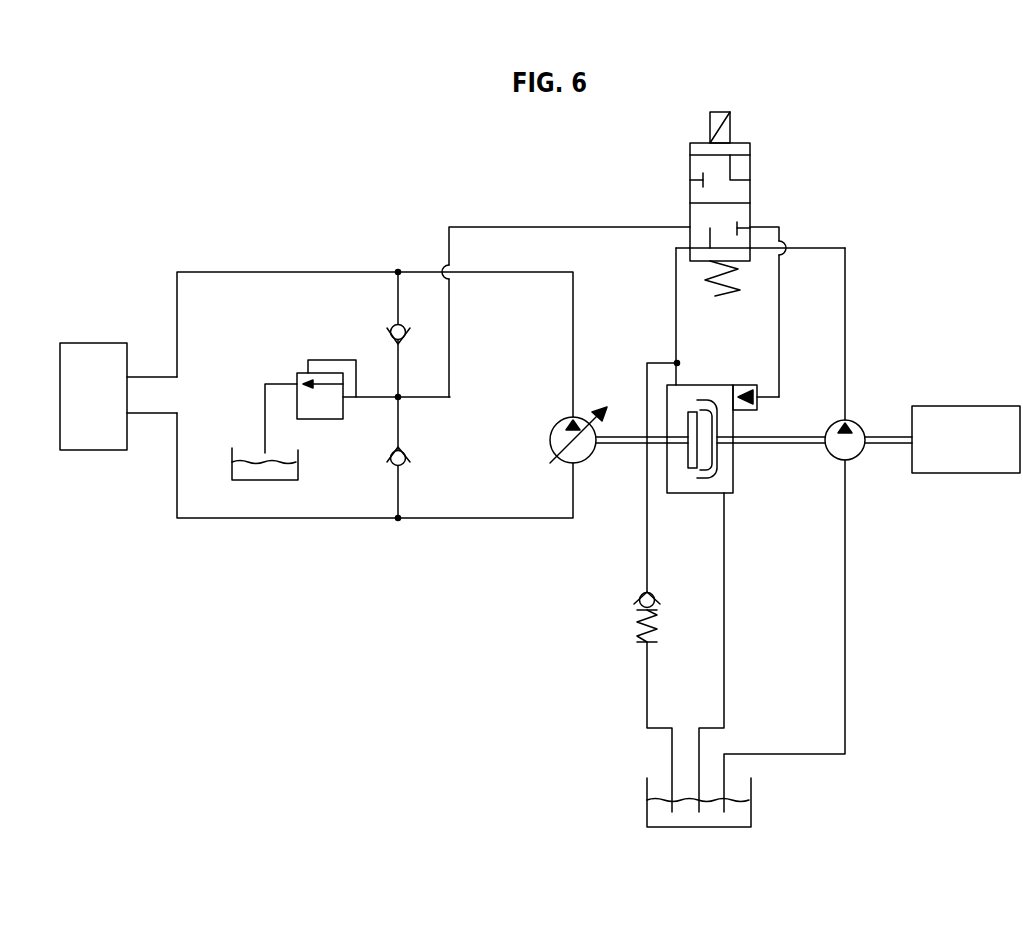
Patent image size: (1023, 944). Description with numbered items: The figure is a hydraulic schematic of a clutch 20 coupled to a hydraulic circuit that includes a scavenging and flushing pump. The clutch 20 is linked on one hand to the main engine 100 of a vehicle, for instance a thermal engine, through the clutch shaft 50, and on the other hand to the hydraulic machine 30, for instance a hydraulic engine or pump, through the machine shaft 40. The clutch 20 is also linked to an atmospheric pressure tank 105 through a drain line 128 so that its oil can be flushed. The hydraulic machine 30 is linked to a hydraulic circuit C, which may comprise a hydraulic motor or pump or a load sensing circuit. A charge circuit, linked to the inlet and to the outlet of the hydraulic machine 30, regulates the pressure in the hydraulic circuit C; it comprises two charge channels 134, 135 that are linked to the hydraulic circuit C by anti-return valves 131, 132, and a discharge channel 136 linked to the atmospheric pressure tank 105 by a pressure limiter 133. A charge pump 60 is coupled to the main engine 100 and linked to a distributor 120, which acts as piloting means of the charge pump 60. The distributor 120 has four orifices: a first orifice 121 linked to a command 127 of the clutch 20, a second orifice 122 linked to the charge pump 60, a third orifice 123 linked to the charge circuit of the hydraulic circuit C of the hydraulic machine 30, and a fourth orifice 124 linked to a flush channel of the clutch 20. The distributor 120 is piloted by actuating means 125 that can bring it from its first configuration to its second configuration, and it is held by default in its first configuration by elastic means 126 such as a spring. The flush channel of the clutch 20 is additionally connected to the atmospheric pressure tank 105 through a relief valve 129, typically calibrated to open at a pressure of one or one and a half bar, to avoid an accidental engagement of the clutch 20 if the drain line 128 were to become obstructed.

The hydraulic circuit C is at (93, 352).
The clutch 20 is at (683, 483).
The hydraulic machine 30 is at (591, 455).
The machine shaft 40 is at (620, 433).
The clutch shaft 50 is at (885, 433).
The charge pump 60 is at (858, 455).
The main engine 100 is at (963, 417).
The atmospheric pressure tank 105 is at (300, 470).
The distributor 120 is at (762, 185).
The first orifice 121 is at (751, 224).
The second orifice 122 is at (752, 263).
The third orifice 123 is at (690, 225).
The fourth orifice 124 is at (690, 241).
The actuating means 125 is at (718, 110).
The elastic means 126 is at (697, 272).
The command 127 is at (750, 407).
The drain line 128 is at (725, 600).
The relief valve 129 is at (638, 590).
The anti-return valve 131 is at (392, 339).
The anti-return valve 132 is at (407, 453).
The pressure limiter 133 is at (320, 420).
The charge channel 134 is at (397, 298).
The charge channel 135 is at (400, 430).
The discharge channel 136 is at (265, 417).